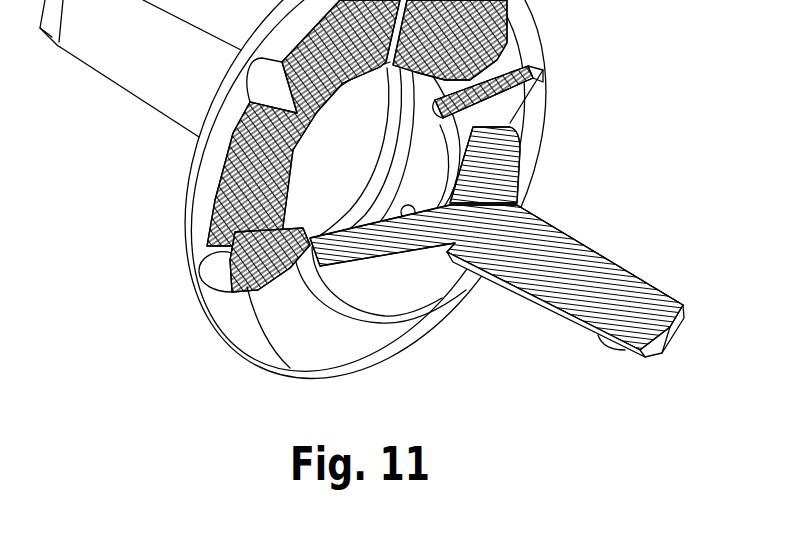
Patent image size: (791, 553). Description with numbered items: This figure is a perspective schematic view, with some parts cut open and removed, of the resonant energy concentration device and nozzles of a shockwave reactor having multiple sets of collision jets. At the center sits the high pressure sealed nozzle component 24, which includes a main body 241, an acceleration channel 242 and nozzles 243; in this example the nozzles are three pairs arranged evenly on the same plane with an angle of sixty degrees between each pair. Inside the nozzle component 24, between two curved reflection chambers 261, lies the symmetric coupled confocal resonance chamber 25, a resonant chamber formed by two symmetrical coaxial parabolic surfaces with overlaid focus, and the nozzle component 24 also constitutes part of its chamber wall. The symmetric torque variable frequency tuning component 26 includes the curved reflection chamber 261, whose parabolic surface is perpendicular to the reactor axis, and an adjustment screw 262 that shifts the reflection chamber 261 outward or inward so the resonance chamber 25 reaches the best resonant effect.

The high pressure sealed nozzle component 24 is at (366, 220).
The main body 241 is at (247, 181).
The acceleration channel 242 is at (233, 257).
The nozzles 243 is at (240, 287).
The symmetric coupled confocal resonance chamber 25 is at (386, 154).
The symmetric torque variable frequency tuning component 26 is at (496, 277).
The curved reflection chamber 261 is at (463, 200).
The adjustment screw 262 is at (563, 270).